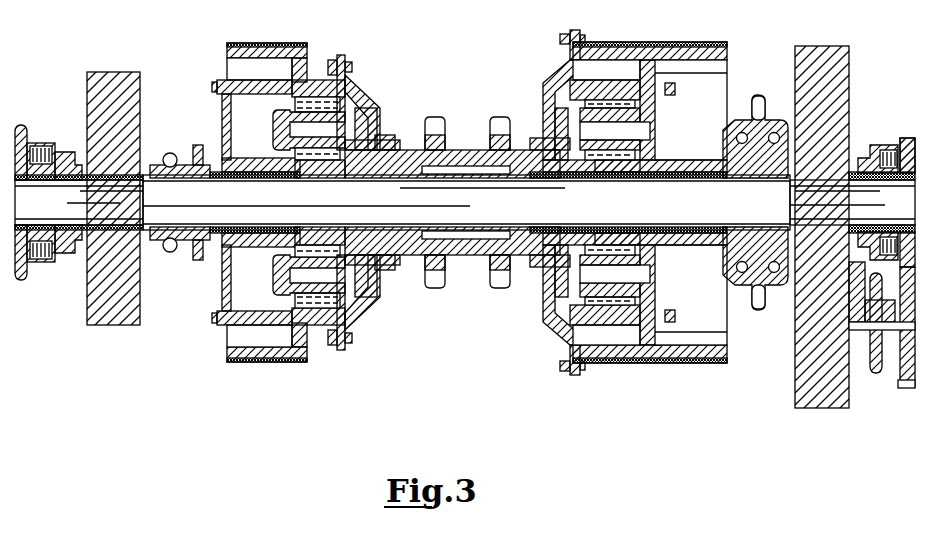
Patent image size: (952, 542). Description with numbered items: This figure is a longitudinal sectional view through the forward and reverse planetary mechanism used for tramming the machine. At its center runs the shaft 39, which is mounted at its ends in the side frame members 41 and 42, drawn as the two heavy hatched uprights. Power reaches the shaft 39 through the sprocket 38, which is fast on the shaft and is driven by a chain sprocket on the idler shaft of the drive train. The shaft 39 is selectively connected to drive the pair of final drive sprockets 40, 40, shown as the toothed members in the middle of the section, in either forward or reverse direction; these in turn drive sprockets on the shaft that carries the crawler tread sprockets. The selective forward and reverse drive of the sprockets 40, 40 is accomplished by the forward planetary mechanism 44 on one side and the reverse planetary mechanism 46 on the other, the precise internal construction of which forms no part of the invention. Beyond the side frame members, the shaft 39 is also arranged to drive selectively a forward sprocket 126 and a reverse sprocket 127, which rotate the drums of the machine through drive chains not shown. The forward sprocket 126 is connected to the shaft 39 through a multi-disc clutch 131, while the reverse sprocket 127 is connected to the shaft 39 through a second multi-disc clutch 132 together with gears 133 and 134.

The sprocket 38 is at (762, 95).
The shaft 39 is at (731, 210).
The final drive sprockets 40 is at (436, 118).
The side frame member 41 is at (843, 107).
The side frame member 42 is at (140, 108).
The forward planetary mechanism 44 is at (648, 40).
The reverse planetary mechanism 46 is at (318, 48).
The forward sprocket 126 is at (25, 125).
The reverse sprocket 127 is at (875, 375).
The multi-disc clutch 131 is at (45, 257).
The multi-disc clutch 132 is at (882, 143).
The gear 133 is at (912, 138).
The gear 134 is at (907, 388).